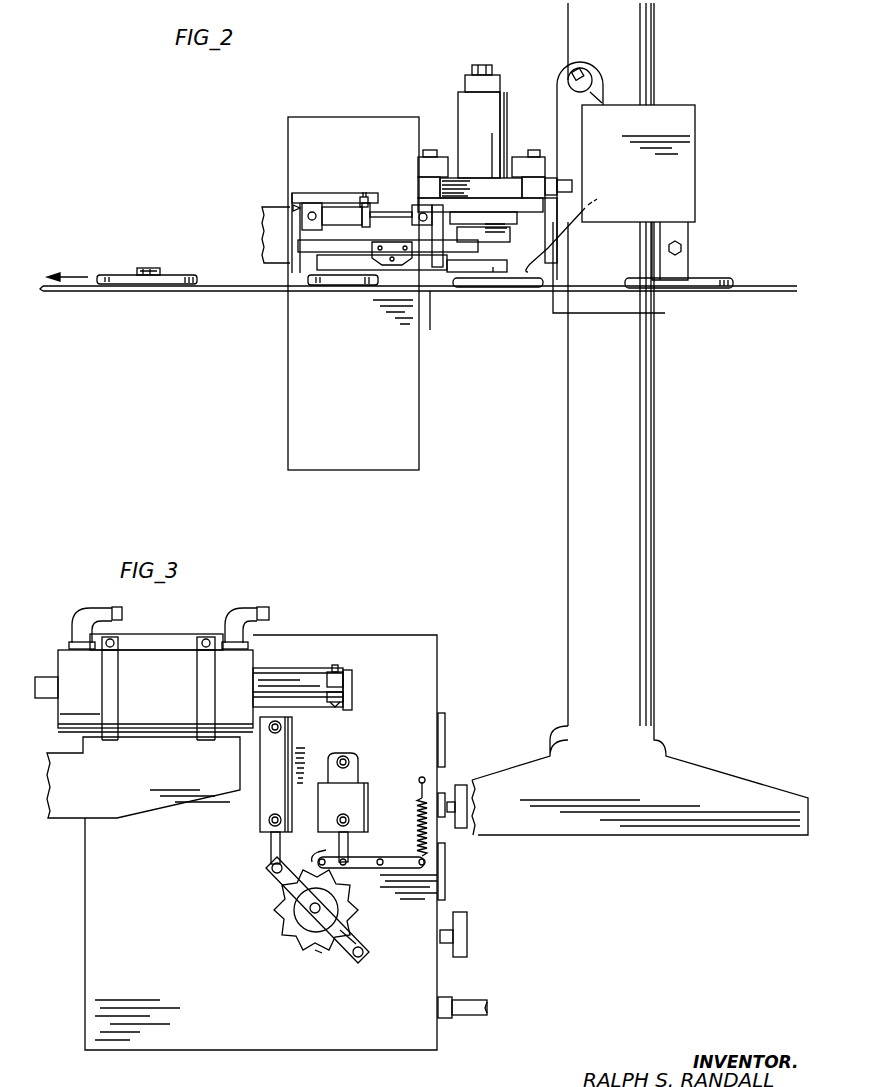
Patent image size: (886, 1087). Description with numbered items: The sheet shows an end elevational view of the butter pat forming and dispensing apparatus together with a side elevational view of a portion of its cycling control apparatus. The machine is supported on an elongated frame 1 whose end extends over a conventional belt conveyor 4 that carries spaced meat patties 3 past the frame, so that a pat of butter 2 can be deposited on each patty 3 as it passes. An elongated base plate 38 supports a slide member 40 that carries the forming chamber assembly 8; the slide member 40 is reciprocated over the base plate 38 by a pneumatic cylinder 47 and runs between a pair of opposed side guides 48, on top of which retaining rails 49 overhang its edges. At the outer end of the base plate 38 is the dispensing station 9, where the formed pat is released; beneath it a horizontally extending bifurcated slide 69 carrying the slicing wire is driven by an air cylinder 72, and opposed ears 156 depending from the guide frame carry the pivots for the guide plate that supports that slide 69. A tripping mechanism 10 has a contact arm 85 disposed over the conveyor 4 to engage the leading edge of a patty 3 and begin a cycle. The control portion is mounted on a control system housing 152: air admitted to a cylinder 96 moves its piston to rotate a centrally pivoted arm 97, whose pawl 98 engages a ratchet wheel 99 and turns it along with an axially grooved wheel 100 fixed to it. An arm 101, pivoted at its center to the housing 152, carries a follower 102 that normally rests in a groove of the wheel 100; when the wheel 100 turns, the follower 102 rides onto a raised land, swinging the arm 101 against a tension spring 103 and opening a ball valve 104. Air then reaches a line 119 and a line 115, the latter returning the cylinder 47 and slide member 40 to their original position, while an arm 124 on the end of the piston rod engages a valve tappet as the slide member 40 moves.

In FIG. 2, the elongated frame 1 is at (655, 431).
In FIG. 2, the pat of butter 2 is at (148, 268).
In FIG. 2, the meat patty 3 is at (177, 273).
In FIG. 2, the belt conveyor 4 is at (746, 291).
In FIG. 2, the forming chamber assembly 8 is at (503, 86).
In FIG. 2, the dispensing station 9 is at (438, 274).
In FIG. 2, the tripping mechanism 10 is at (668, 102).
In FIG. 2, the base plate 38 is at (432, 202).
In FIG. 2, the slide member 40 is at (479, 178).
In FIG. 3, the pneumatic cylinder 47 is at (163, 697).
In FIG. 2, the side guides 48 is at (425, 185).
In FIG. 2, the retaining rails 49 is at (515, 157).
In FIG. 2, the bifurcated slide 69 is at (495, 268).
In FIG. 2, the air cylinder 72 is at (338, 207).
In FIG. 2, the contact arm 85 is at (558, 246).
In FIG. 3, the cylinder 96 is at (265, 808).
In FIG. 3, the centrally pivoted arm 97 is at (277, 880).
In FIG. 3, the pawl 98 is at (353, 925).
In FIG. 3, the ratchet wheel 99 is at (293, 913).
In FIG. 3, the axially grooved wheel 100 is at (318, 950).
In FIG. 3, the arm 101 is at (390, 870).
In FIG. 3, the follower 102 is at (322, 857).
In FIG. 3, the tension spring 103 is at (417, 830).
In FIG. 3, the ball valve 104 is at (348, 795).
In FIG. 3, the line 115 is at (115, 608).
In FIG. 3, the line 119 is at (268, 608).
In FIG. 3, the arm 124 is at (335, 675).
In FIG. 2, the control system housing 152 is at (357, 423).
In FIG. 3, the control system housing 152 is at (171, 880).
In FIG. 2, the ears 156 is at (383, 243).